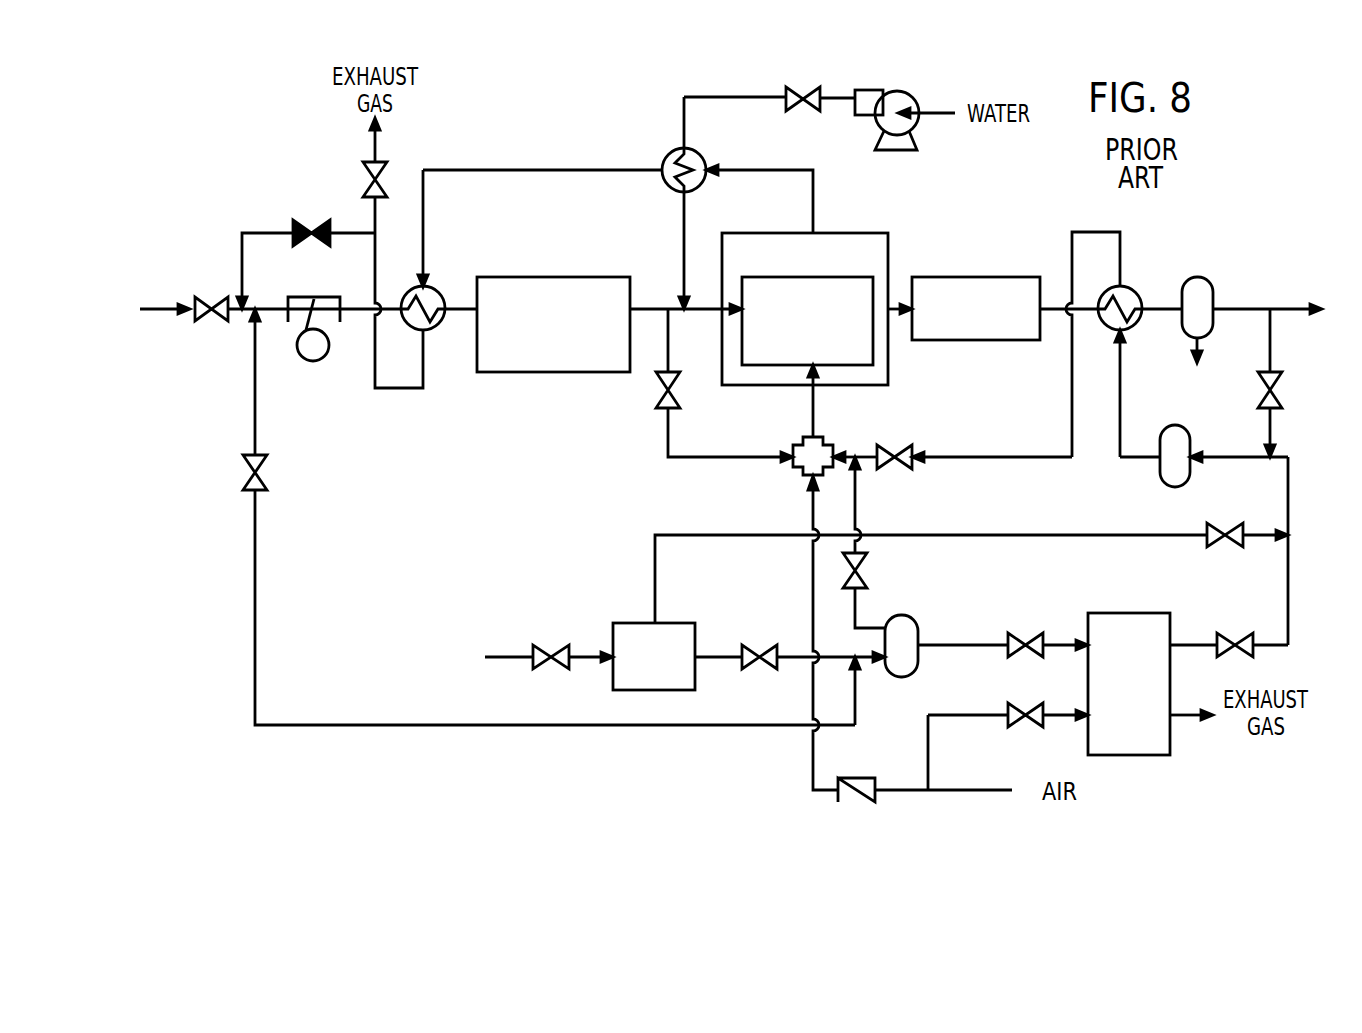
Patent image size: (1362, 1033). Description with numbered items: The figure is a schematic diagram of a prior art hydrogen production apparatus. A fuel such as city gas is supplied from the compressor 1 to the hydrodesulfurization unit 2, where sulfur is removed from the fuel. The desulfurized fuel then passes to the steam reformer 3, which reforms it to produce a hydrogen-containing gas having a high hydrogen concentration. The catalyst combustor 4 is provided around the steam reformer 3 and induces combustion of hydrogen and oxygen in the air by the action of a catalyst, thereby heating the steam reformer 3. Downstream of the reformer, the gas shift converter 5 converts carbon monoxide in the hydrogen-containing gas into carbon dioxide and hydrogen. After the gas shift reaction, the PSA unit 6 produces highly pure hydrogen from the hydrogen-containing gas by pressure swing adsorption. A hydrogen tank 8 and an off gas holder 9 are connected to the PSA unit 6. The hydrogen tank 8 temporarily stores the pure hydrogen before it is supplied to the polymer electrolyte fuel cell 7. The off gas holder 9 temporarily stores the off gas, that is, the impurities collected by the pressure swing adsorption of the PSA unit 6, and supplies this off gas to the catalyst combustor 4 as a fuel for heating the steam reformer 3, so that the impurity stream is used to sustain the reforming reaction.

The compressor 1 is at (312, 297).
The hydrodesulfurization unit 2 is at (621, 277).
The steam reformer 3 is at (863, 277).
The catalyst combustor 4 is at (861, 233).
The gas shift converter 5 is at (1031, 277).
The PSA unit 6 is at (686, 623).
The polymer electrolyte fuel cell 7 is at (1163, 613).
The hydrogen tank 8 is at (899, 615).
The off gas holder 9 is at (1174, 425).